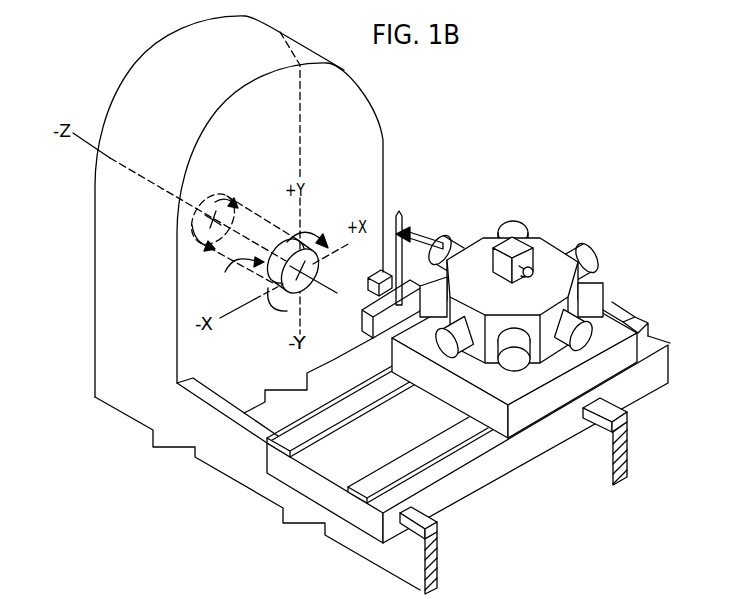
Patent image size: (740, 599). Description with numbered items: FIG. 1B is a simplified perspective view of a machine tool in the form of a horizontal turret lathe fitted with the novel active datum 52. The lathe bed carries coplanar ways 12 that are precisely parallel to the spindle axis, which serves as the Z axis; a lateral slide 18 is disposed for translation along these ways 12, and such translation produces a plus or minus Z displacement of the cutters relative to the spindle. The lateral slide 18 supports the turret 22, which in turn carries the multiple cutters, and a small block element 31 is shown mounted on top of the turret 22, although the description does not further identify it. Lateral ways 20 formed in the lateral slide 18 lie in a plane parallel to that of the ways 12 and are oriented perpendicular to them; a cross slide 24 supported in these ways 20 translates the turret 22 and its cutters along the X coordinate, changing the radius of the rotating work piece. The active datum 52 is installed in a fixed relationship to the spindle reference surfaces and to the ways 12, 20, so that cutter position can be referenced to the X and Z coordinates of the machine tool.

The ways 12 is at (631, 433).
The lateral slide 18 is at (668, 330).
The lateral ways 20 is at (412, 441).
The turret 22 is at (551, 241).
The cross slide 24 is at (522, 420).
The tool block 31 is at (488, 257).
The active datum 52 is at (424, 201).